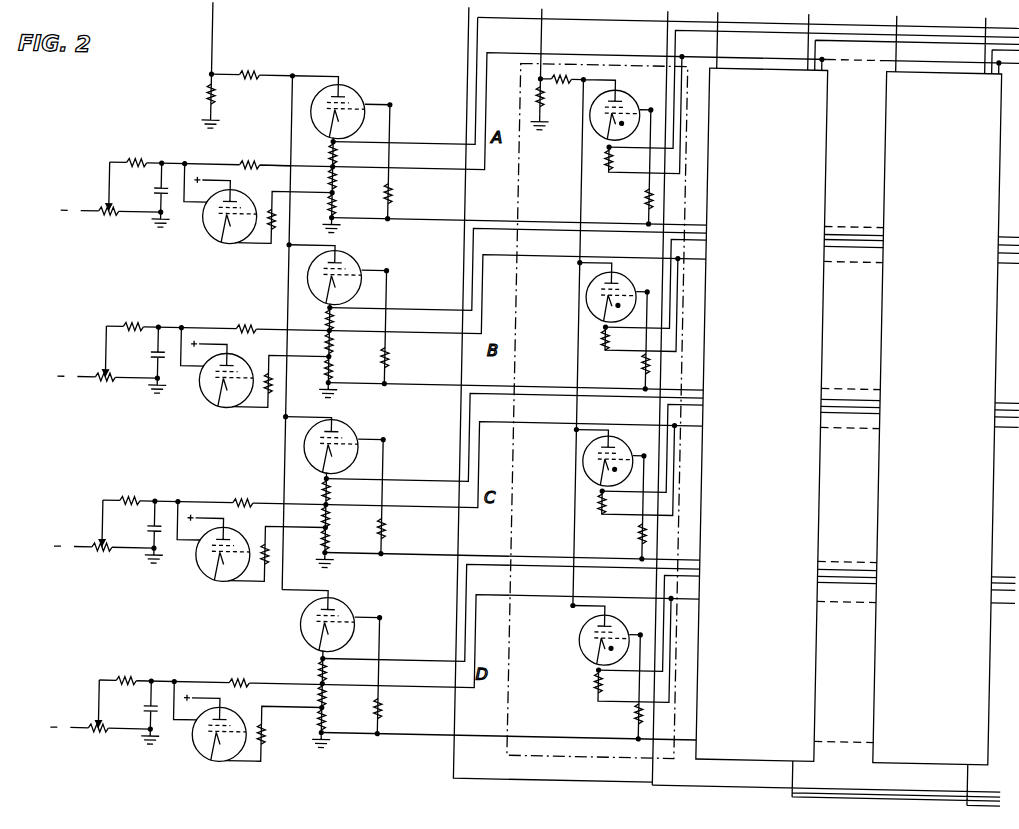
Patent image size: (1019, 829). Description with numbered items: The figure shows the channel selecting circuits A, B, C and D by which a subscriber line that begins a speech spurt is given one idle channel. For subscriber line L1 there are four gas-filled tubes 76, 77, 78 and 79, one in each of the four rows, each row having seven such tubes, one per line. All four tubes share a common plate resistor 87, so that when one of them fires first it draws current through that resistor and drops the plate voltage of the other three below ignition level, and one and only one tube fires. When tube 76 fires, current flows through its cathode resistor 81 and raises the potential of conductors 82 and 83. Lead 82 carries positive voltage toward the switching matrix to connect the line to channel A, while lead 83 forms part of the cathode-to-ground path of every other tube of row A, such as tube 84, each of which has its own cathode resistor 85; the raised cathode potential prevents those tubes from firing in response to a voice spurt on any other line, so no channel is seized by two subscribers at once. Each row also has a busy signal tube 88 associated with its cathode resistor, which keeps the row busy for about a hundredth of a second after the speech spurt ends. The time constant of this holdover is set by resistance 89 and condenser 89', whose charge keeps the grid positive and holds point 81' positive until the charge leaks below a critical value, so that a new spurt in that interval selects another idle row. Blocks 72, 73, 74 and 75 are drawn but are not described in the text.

The selection circuit enclosure 72 is at (518, 779).
The register unit 73 is at (708, 782).
The output conductor bundle 74 is at (880, 781).
The second register unit 75 is at (975, 764).
The gas-filled tube 76 is at (353, 96).
The gas-filled tube 77 is at (352, 262).
The gas-filled tube 78 is at (351, 430).
The gas-filled tube 79 is at (352, 613).
The cathode resistor 81 is at (352, 185).
The point 81' is at (315, 209).
The conductor 82 is at (444, 144).
The lead 83 is at (421, 169).
The tube 84 is at (618, 89).
The cathode resistor 85 is at (600, 160).
The common plate resistor 87 is at (258, 74).
The busy signal tube 88 is at (229, 247).
The resistance 89 is at (111, 186).
The condenser 89' is at (166, 170).